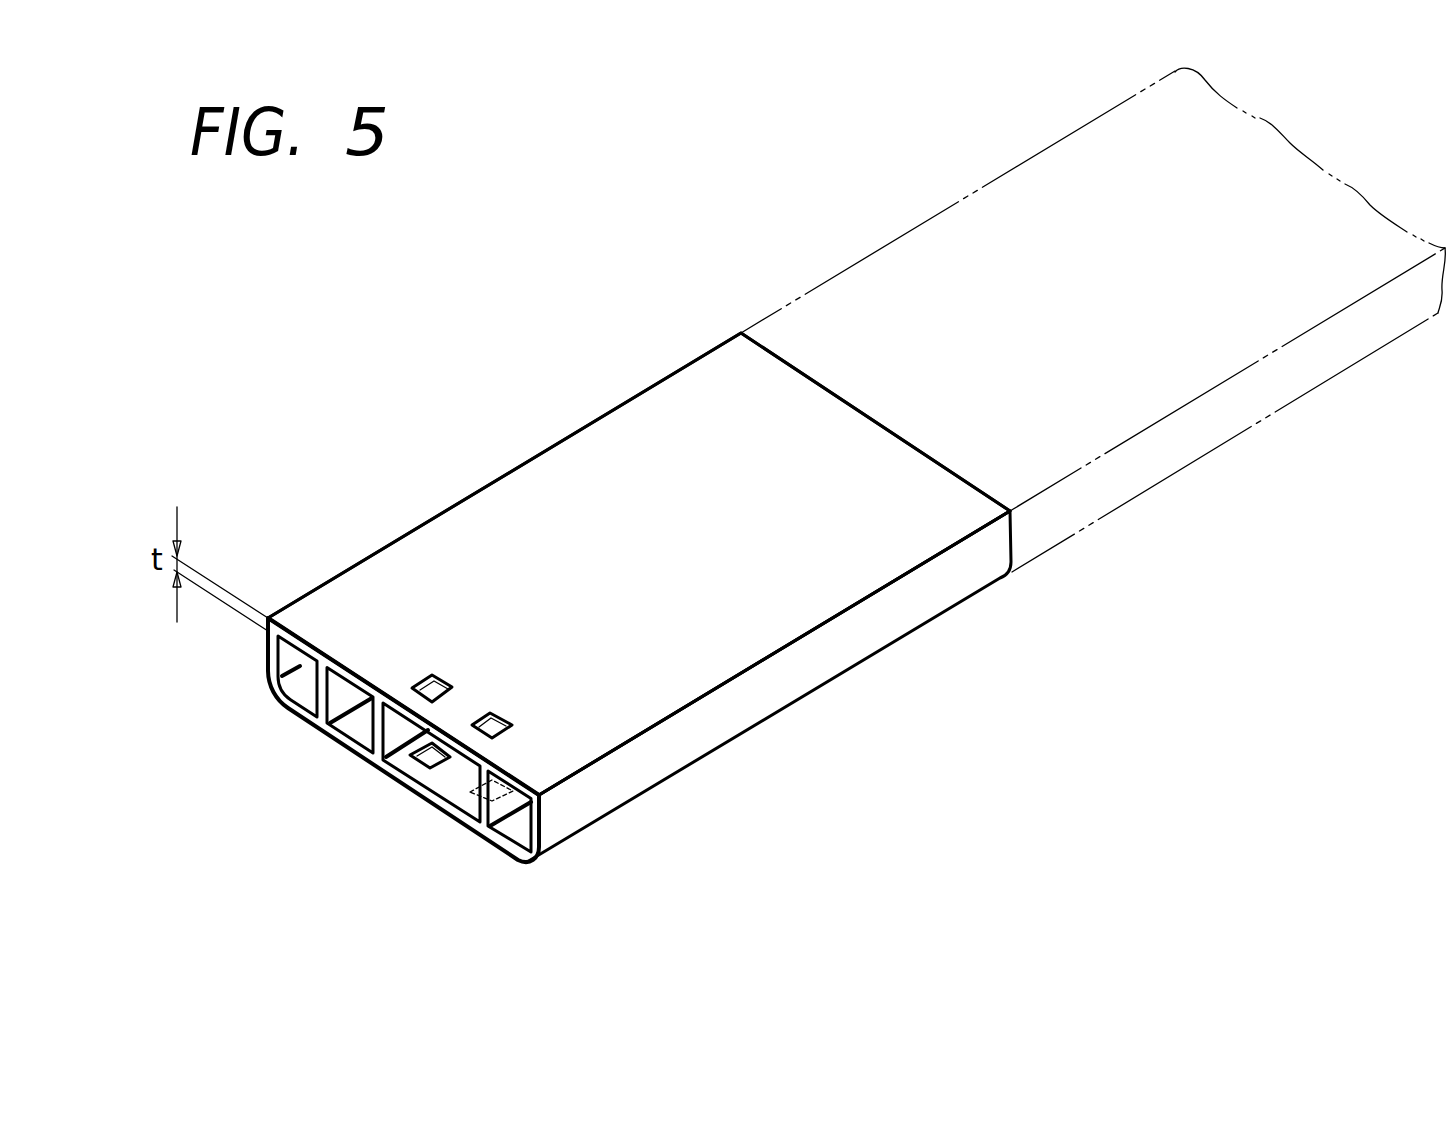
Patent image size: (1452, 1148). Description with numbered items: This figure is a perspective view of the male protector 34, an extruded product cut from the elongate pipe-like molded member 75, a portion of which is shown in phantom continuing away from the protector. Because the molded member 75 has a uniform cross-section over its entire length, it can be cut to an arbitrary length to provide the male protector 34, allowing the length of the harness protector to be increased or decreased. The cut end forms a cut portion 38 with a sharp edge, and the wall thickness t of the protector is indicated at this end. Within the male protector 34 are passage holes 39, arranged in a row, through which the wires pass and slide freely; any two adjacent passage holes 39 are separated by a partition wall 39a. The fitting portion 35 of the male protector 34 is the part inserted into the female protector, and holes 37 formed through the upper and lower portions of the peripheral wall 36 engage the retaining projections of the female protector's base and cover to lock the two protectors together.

The male protector 34 is at (563, 402).
The fitting portion 35 is at (560, 767).
The peripheral wall 36 is at (764, 624).
The holes 37 is at (435, 676).
The cut portion 38 is at (282, 701).
The passage holes 39 is at (345, 695).
The partition wall 39a is at (318, 686).
The elongate molded member 75 is at (952, 280).